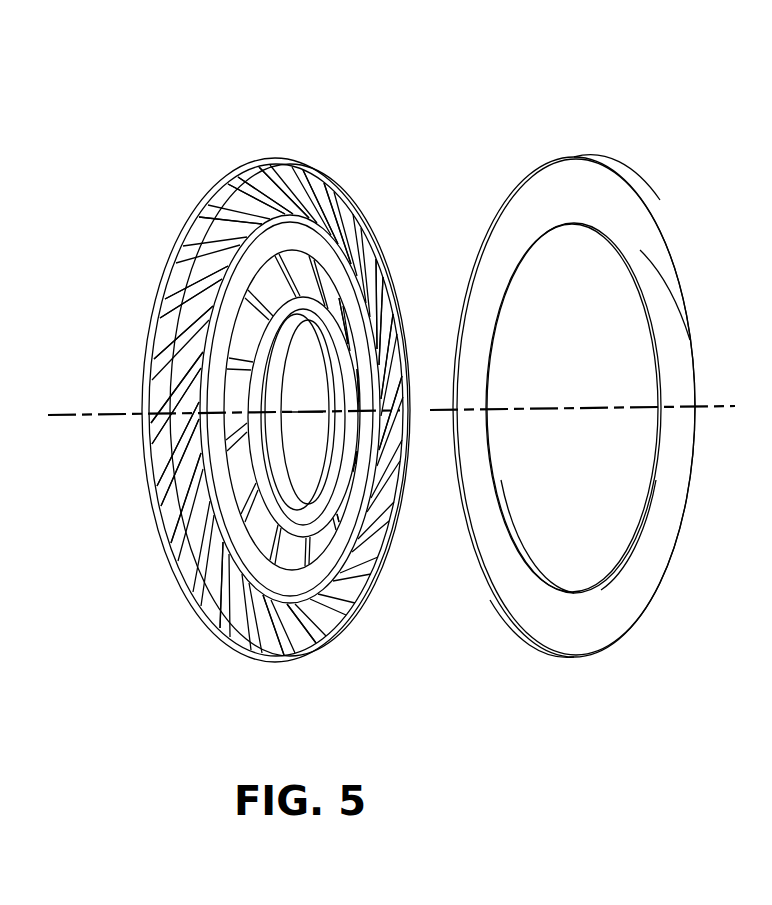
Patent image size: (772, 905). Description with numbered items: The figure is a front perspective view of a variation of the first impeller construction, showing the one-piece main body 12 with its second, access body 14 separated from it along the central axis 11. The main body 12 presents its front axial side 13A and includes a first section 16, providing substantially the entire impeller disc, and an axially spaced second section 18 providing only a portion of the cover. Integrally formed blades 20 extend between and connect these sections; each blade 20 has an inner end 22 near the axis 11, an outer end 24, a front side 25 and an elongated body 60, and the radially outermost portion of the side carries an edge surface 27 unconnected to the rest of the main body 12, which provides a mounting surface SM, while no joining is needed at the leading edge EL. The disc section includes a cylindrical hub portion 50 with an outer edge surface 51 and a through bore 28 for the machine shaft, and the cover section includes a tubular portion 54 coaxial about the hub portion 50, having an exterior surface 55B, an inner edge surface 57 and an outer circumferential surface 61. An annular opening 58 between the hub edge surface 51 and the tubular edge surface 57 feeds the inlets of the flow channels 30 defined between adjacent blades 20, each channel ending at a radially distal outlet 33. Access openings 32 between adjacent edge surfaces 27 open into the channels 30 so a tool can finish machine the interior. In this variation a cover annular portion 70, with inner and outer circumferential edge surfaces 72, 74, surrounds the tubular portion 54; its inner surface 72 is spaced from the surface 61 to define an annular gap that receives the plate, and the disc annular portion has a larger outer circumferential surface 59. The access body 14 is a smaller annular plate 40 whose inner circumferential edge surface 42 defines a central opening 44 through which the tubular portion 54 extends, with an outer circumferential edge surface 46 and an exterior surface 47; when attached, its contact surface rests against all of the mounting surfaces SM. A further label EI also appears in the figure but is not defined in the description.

The central axis 11 is at (712, 402).
The main body 12 is at (222, 108).
The front axial side 13A is at (338, 222).
The second body 14 is at (568, 122).
The first section 16 is at (210, 630).
The second section 18 is at (310, 598).
The blades 20 is at (304, 172).
The blade inner end 22 is at (345, 488).
The blade outer end 24 is at (207, 198).
The blade front side 25 is at (212, 255).
The edge surface 27 is at (358, 268).
The through bore 28 is at (350, 448).
The flow channels 30 is at (273, 165).
The access openings 32 is at (205, 240).
The flow channel outlet 33 is at (146, 376).
The annular plate 40 is at (614, 205).
The inner circumferential edge surface 42 is at (517, 540).
The central opening 44 is at (607, 510).
The outer circumferential edge surface 46 is at (513, 627).
The exterior surface 47 is at (657, 283).
The hub portion 50 is at (348, 347).
The hub outer edge surface 51 is at (345, 470).
The tubular portion 54 is at (382, 362).
The tubular portion exterior surface 55B is at (273, 590).
The tubular portion inner edge surface 57 is at (350, 447).
The annular opening 58 is at (355, 465).
The annular portion outer circumferential surface 59 is at (175, 460).
The blade body 60 is at (190, 535).
The tubular portion outer circumferential surface 61 is at (168, 445).
The cover annular portion 70 is at (292, 152).
The inner circumferential edge surface 72 is at (165, 432).
The outer circumferential edge surface 74 is at (350, 160).
The mounting surface SM is at (240, 183).
The leading edge EL is at (342, 312).
The inner edge EI is at (335, 450).